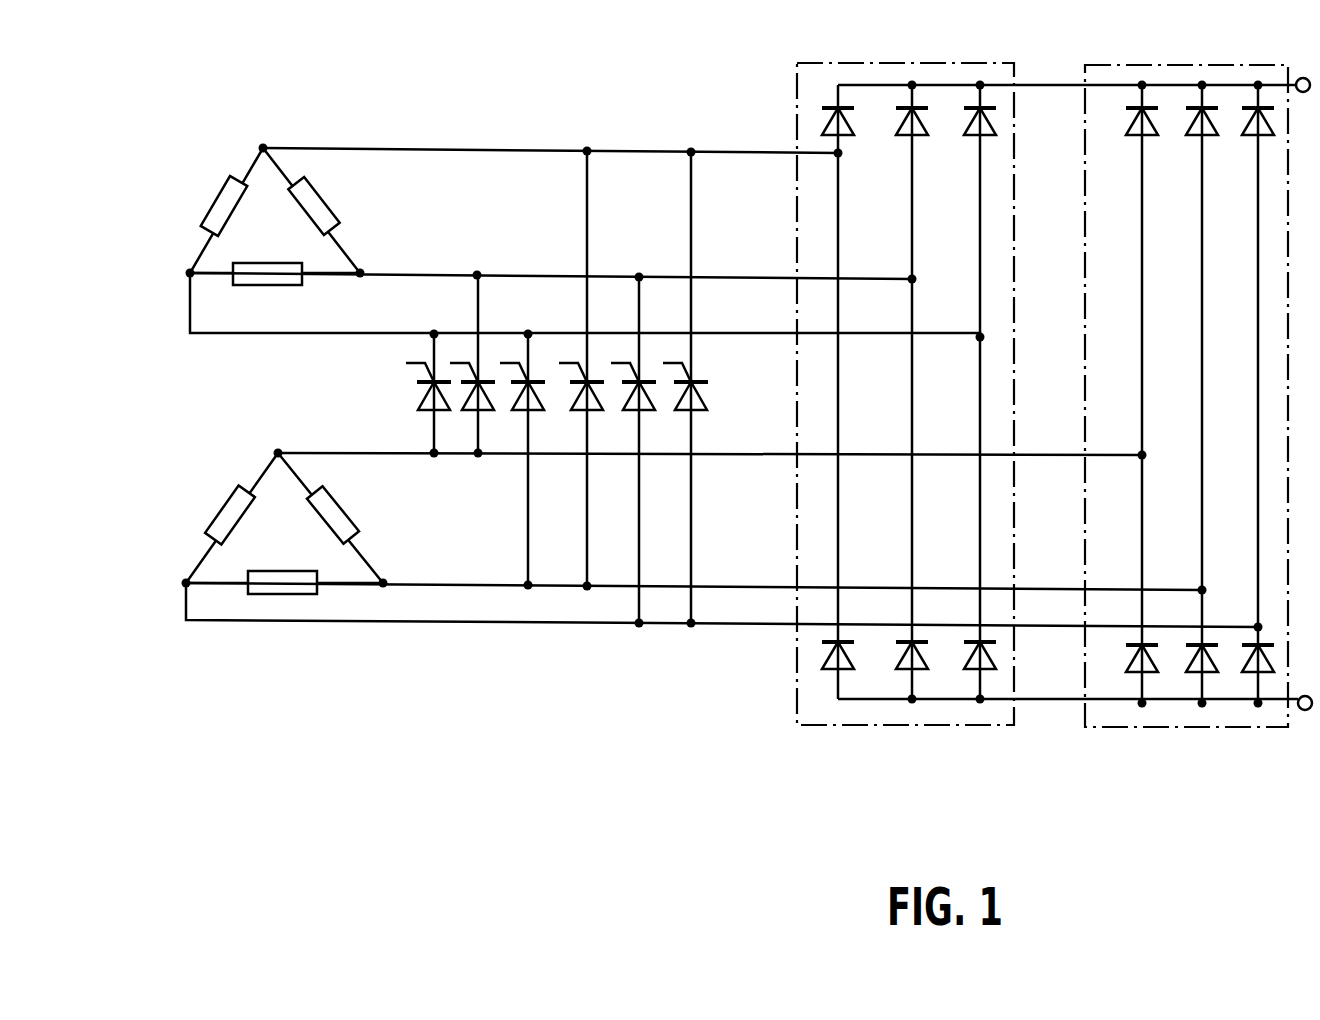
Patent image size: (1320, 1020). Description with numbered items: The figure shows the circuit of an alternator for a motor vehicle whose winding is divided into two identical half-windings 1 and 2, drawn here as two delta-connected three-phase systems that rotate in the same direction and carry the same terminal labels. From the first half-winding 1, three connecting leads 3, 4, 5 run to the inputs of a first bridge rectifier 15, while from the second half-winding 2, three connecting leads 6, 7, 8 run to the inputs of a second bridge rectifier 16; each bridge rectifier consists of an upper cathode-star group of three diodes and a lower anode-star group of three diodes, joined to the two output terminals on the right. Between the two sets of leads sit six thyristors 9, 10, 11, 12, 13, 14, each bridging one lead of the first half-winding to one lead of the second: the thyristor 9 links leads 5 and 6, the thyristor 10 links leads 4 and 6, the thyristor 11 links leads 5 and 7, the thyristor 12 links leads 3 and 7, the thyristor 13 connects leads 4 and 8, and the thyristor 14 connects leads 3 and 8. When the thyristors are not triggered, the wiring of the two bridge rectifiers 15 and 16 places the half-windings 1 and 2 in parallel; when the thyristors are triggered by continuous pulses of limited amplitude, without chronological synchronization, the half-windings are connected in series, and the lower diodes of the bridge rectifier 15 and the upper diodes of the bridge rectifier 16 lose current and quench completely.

The half-winding 1 is at (210, 196).
The half-winding 2 is at (216, 495).
The connecting lead 3 is at (447, 148).
The connecting lead 4 is at (448, 273).
The connecting lead 5 is at (248, 333).
The connecting lead 6 is at (337, 453).
The connecting lead 7 is at (463, 583).
The connecting lead 8 is at (343, 622).
The thyristor 9 is at (425, 401).
The thyristor 10 is at (471, 410).
The thyristor 11 is at (527, 412).
The thyristor 12 is at (585, 412).
The thyristor 13 is at (637, 412).
The thyristor 14 is at (690, 412).
The bridge rectifier 15 is at (830, 725).
The bridge rectifier 16 is at (1120, 727).